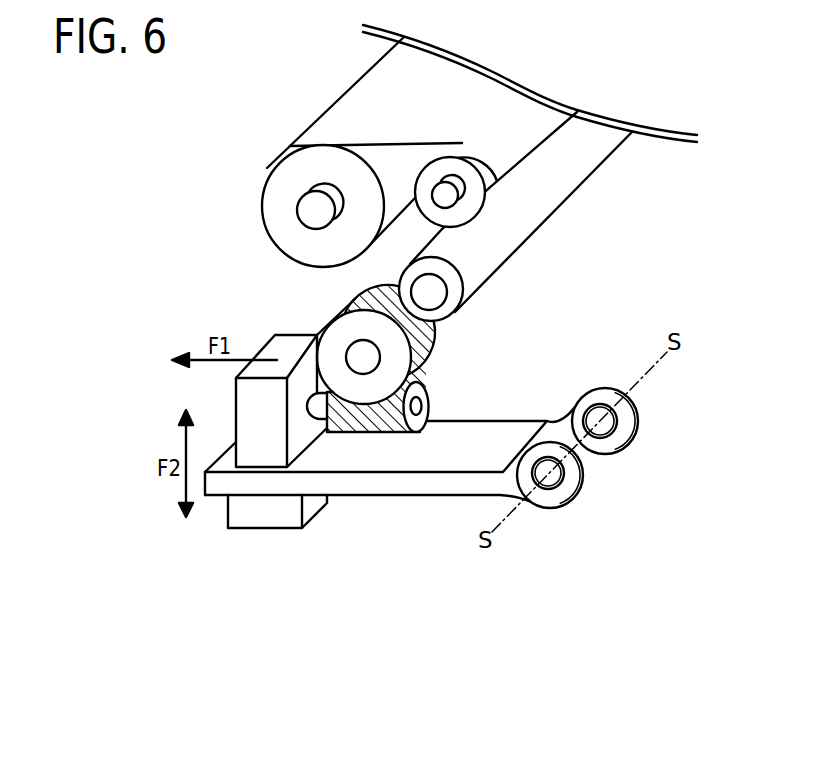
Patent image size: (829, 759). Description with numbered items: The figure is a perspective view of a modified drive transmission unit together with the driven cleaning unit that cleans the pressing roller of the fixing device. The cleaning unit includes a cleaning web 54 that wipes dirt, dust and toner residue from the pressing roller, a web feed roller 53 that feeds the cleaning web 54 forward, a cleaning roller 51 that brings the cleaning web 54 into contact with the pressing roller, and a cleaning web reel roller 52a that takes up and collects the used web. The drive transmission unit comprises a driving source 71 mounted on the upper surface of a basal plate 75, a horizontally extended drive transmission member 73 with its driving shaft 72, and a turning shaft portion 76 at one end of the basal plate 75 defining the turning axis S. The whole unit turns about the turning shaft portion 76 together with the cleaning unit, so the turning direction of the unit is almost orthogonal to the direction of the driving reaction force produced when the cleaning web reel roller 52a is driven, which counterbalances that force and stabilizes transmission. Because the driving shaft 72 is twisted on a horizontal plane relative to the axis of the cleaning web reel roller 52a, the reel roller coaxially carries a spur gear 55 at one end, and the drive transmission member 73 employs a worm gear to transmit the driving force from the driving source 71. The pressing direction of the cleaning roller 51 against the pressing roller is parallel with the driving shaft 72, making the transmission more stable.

The cleaning roller 51 is at (470, 209).
The cleaning web reel roller 52a is at (490, 267).
The web feed roller 53 is at (262, 203).
The cleaning web 54 is at (340, 112).
The spur gear 55 is at (418, 362).
The driving source 71 is at (262, 458).
The driving shaft 72 is at (315, 408).
The drive transmission member 73 is at (429, 404).
The basal plate 75 is at (441, 489).
The turning shaft portion 76 is at (567, 492).